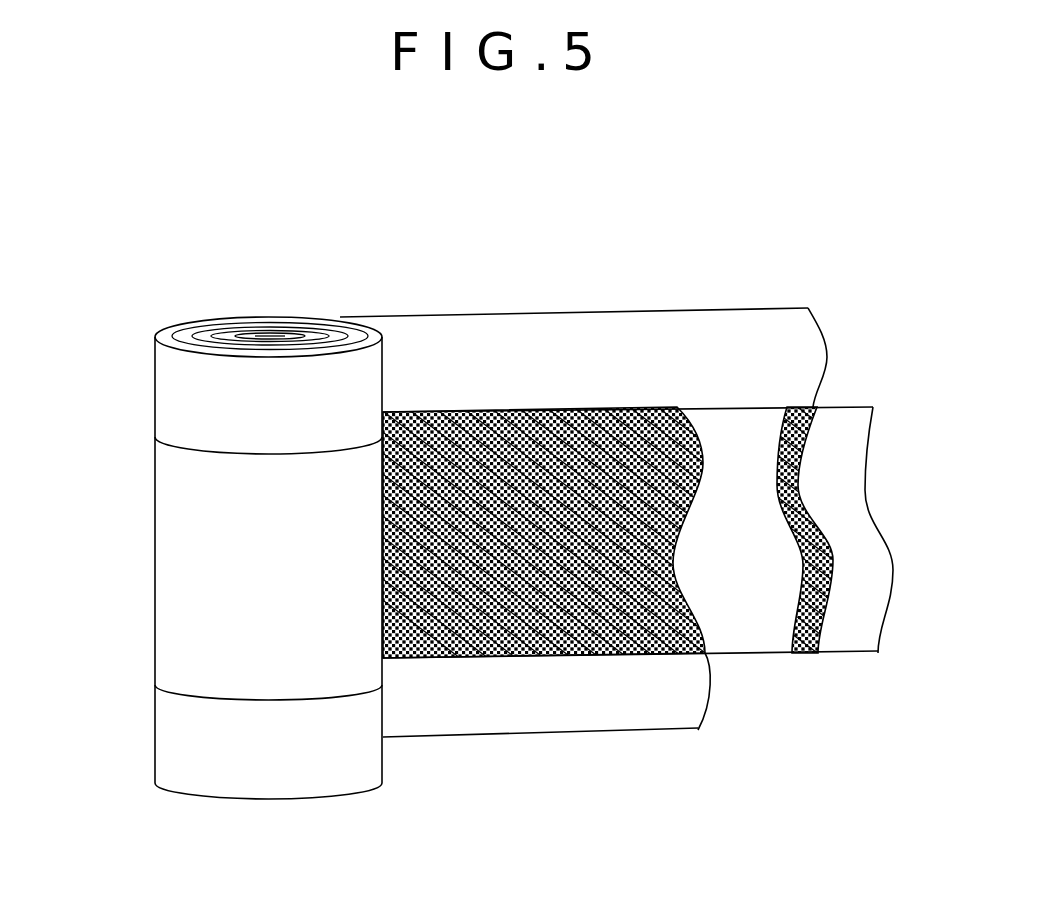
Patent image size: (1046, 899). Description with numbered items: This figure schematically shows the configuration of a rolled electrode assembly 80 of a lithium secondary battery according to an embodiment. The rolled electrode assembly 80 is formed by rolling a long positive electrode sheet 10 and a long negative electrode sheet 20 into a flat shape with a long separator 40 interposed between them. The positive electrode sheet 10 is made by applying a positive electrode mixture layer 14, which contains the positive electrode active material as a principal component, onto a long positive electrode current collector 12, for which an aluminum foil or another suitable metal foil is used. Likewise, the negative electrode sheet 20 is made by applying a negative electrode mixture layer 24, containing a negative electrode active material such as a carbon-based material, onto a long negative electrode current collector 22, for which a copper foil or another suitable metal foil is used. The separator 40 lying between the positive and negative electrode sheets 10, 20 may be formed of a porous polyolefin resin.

The rolled electrode assembly 80 is at (155, 300).
The positive electrode sheet 10 is at (606, 421).
The positive electrode current collector 12 is at (771, 325).
The positive electrode mixture layer 14 is at (798, 412).
The negative electrode sheet 20 is at (581, 629).
The negative electrode current collector 22 is at (520, 717).
The negative electrode mixture layer 24 is at (643, 658).
The separator 40 is at (740, 640).